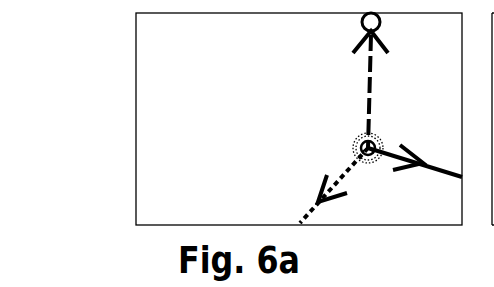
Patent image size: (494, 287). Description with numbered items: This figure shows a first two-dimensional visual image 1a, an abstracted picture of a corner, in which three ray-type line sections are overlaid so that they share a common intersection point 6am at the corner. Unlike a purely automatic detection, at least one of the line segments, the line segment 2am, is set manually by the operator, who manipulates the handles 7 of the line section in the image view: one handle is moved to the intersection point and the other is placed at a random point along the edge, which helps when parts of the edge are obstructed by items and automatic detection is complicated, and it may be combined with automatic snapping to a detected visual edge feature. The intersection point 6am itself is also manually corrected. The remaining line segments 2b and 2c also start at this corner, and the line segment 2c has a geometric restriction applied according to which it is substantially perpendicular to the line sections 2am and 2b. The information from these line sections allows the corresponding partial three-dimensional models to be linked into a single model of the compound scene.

The first 2D-visual-image 1a is at (99, 88).
The manually set line segment 2am is at (368, 110).
The line segment 2b is at (315, 189).
The line segment 2c is at (388, 145).
The intersection point 6am is at (348, 138).
The handles 7 is at (372, 158).